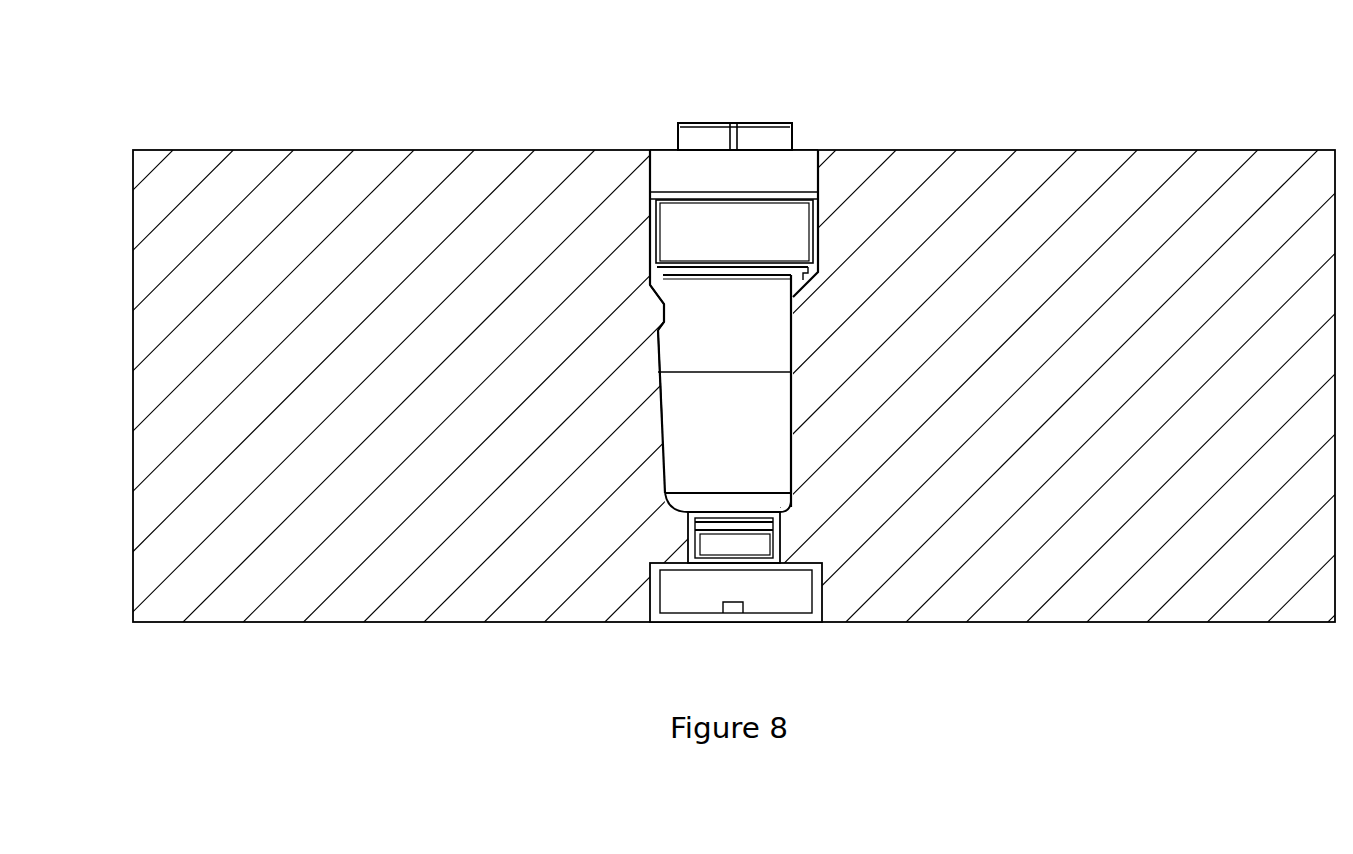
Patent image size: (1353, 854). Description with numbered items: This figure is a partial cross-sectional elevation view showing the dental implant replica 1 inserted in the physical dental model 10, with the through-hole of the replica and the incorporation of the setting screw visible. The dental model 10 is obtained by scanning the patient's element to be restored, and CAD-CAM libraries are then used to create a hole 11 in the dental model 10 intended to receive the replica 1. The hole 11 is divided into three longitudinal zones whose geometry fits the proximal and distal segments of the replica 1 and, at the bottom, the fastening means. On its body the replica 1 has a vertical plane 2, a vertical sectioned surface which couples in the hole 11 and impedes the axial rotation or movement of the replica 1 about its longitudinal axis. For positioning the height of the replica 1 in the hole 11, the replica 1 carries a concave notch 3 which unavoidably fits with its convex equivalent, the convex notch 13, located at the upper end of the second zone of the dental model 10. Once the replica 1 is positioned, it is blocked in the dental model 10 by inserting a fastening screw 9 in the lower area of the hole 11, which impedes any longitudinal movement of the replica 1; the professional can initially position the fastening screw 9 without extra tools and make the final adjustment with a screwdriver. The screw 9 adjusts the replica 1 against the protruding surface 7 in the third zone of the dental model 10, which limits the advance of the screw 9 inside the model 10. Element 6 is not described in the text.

The dental model 10 is at (383, 212).
The hole 11 is at (645, 225).
The cap 6 is at (787, 122).
The dental implant replica 1 is at (788, 165).
The vertical plane 2 is at (795, 345).
The convex notch 13 is at (637, 321).
The concave notch 3 is at (657, 328).
The protruding surface 7 is at (784, 553).
The fastening screw 9 is at (692, 595).